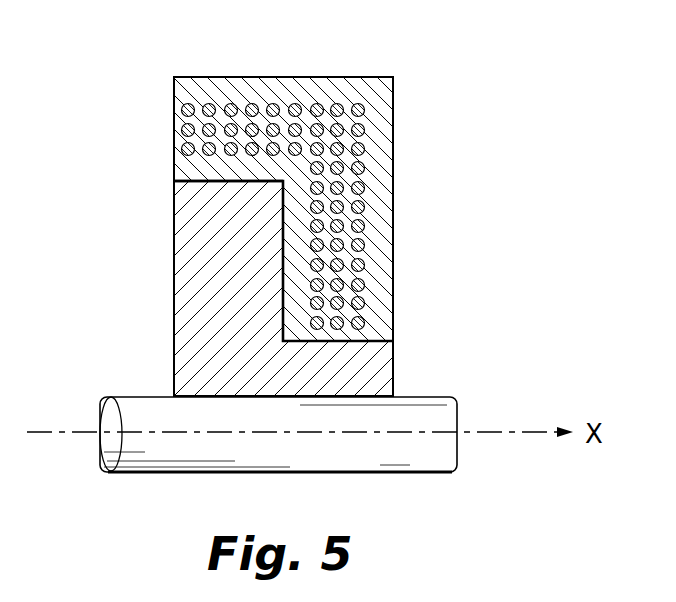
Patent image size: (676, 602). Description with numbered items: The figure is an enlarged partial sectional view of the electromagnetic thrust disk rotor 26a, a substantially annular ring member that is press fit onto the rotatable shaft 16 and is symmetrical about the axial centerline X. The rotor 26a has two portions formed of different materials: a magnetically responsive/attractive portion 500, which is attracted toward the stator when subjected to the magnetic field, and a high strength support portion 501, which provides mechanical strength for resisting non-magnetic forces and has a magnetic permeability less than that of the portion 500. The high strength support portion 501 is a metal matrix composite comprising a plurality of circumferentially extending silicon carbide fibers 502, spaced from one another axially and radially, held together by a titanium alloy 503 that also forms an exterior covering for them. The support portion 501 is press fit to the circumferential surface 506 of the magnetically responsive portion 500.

The electromagnetic thrust disk rotor 26a is at (338, 211).
The high strength support portion 501 is at (338, 211).
The fibers 502 is at (211, 104).
The titanium alloy 503 is at (174, 181).
The circumferential surface 506 is at (245, 186).
The magnetically responsive/attractive portion 500 is at (198, 360).
The rotatable shaft 16 is at (139, 412).